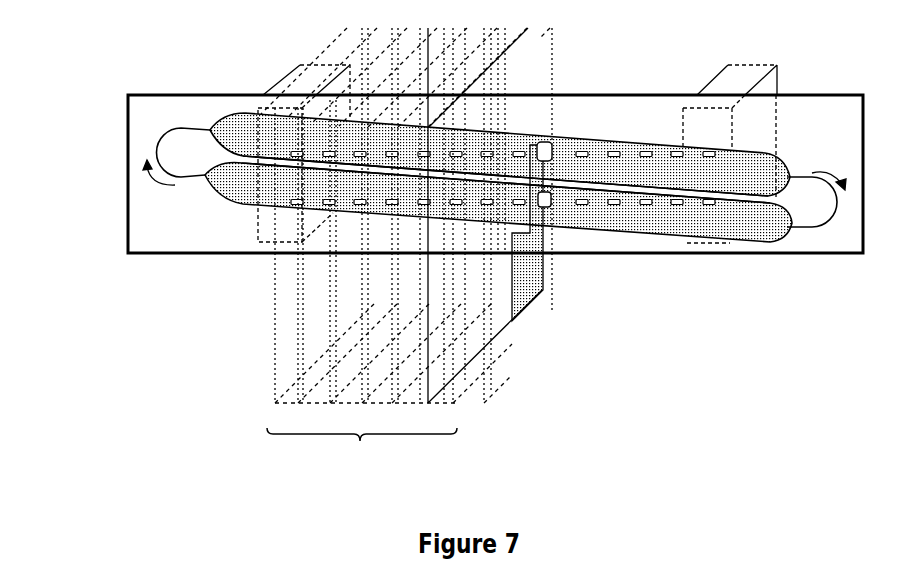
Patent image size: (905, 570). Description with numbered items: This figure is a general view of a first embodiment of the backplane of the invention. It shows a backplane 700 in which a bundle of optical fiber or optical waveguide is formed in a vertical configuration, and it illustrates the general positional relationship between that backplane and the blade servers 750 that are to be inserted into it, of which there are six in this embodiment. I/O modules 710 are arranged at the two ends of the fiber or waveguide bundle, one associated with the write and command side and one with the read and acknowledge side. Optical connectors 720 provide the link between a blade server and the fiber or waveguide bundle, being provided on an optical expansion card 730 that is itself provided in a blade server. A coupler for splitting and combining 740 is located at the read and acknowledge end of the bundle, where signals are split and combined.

The backplane 700 is at (192, 248).
The I/O module 710 is at (298, 86).
The optical connector 720 is at (546, 198).
The optical expansion card 730 is at (535, 278).
The coupler for splitting and combining 740 is at (788, 180).
The blade servers 750 is at (424, 253).